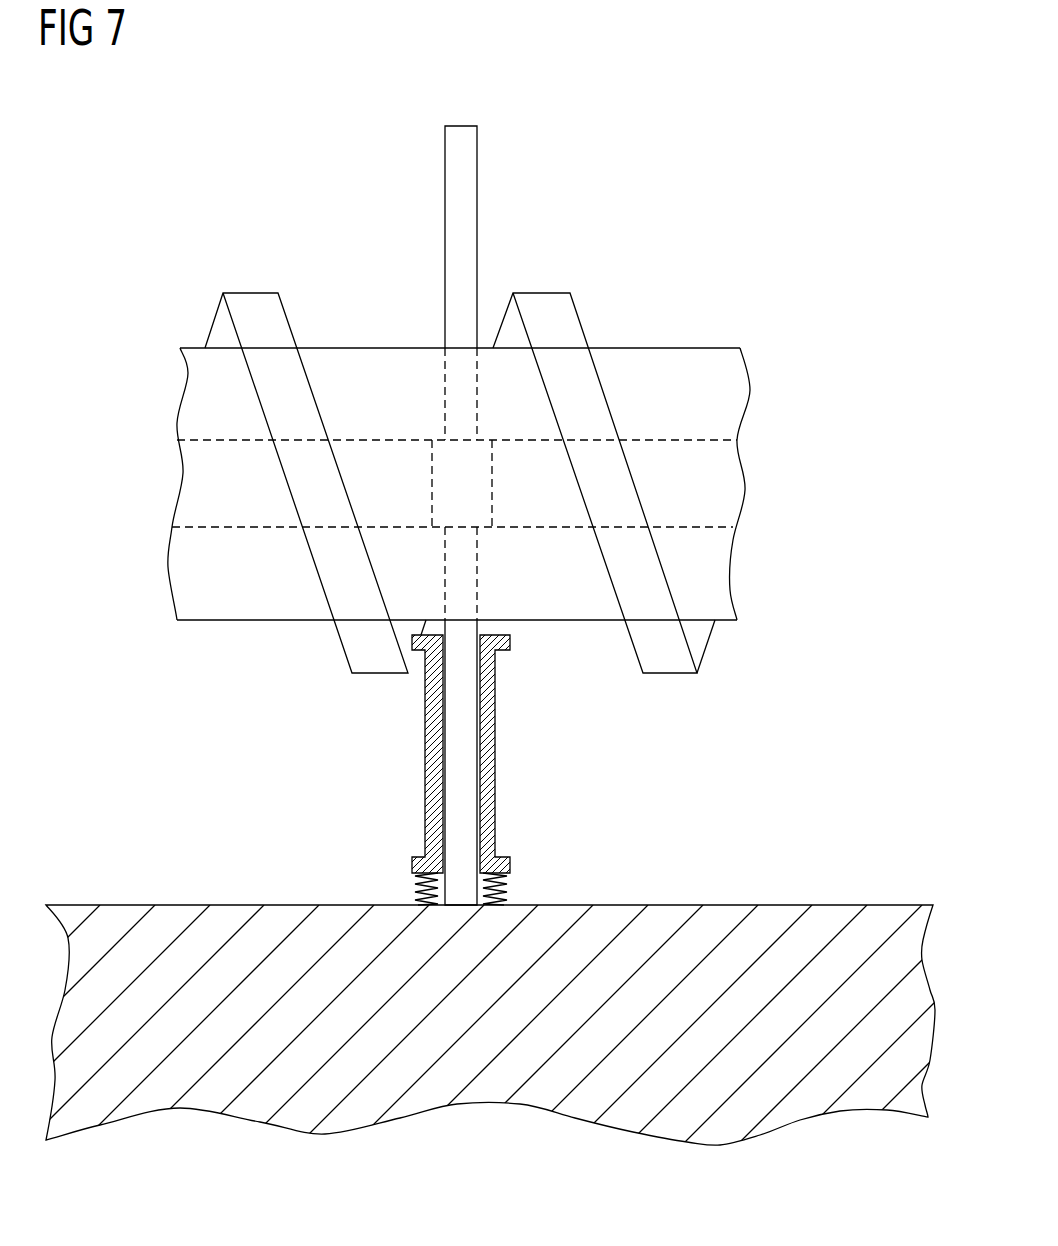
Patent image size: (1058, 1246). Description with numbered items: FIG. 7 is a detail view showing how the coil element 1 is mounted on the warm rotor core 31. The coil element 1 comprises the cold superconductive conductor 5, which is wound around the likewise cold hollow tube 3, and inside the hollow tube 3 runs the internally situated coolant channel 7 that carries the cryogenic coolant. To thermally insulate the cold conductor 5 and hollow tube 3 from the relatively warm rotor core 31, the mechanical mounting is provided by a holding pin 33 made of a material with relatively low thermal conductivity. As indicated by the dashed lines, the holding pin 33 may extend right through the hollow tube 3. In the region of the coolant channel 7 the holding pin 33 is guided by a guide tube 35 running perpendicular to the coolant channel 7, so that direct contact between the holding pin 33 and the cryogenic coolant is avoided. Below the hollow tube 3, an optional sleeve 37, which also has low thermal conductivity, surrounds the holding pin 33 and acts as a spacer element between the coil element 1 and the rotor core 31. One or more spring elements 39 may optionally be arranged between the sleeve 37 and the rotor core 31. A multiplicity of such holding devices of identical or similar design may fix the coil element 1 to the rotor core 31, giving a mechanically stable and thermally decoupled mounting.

The coil element 1 is at (271, 185).
The hollow tube 3 is at (661, 364).
The superconductive conductor 5 is at (545, 305).
The coolant channel 7 is at (752, 483).
The rotor core 31 is at (838, 918).
The holding pin 33 is at (466, 196).
The guide tube 35 is at (478, 485).
The sleeve 37 is at (496, 757).
The spring elements 39 is at (508, 893).